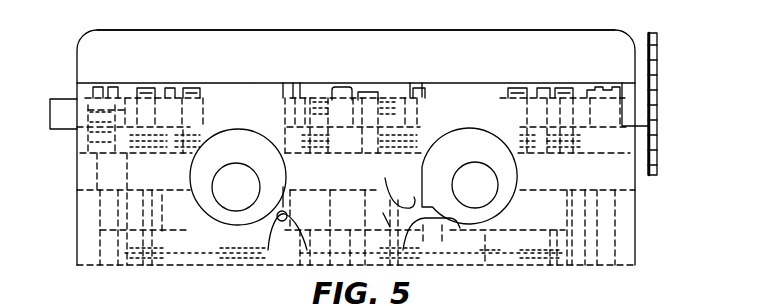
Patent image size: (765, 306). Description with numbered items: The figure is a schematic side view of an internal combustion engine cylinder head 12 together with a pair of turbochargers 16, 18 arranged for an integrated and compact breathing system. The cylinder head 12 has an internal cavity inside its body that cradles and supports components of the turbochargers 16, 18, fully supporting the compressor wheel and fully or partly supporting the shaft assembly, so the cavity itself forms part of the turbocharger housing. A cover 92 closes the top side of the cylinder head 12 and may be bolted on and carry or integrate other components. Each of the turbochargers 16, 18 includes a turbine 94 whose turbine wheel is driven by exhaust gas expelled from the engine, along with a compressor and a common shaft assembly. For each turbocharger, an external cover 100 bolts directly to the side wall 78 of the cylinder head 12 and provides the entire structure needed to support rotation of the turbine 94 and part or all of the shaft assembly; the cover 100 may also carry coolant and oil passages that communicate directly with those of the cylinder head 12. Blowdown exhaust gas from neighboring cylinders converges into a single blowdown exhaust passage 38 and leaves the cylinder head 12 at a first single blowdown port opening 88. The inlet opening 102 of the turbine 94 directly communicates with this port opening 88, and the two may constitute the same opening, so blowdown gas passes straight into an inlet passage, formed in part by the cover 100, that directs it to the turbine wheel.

The cylinder head 12 is at (636, 250).
The turbocharger 16 is at (476, 129).
The turbocharger 18 is at (236, 129).
The single blowdown exhaust passage 38 is at (387, 199).
The side wall 78 is at (88, 191).
The first single blowdown port opening 88 is at (283, 220).
The cover 92 is at (608, 34).
The turbine 94 is at (233, 213).
The cover 100 is at (256, 146).
The inlet opening 102 is at (289, 200).